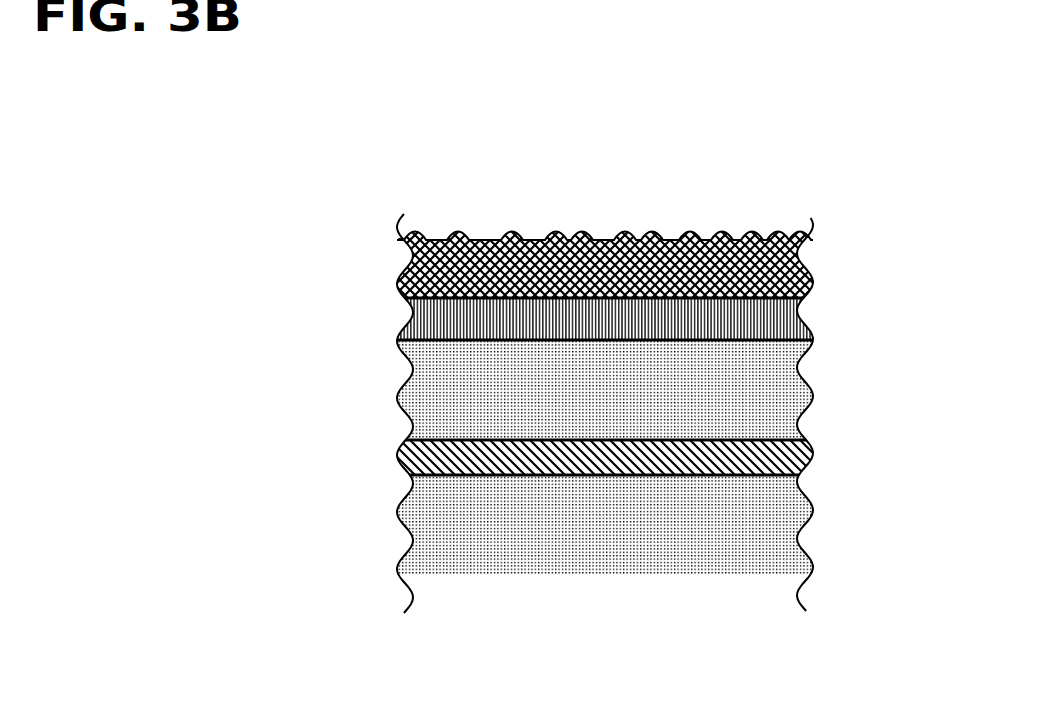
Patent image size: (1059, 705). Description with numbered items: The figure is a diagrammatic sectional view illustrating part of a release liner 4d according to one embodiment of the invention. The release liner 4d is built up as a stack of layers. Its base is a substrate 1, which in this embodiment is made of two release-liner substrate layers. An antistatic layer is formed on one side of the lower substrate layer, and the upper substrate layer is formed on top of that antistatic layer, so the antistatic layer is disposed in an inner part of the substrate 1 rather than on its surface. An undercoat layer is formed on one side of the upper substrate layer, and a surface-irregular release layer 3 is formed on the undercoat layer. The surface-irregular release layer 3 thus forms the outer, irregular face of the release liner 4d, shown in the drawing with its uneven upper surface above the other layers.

The substrate 1 is at (752, 0).
The surface-irregular release layer 3 is at (557, 237).
The release liner 4d is at (657, 190).